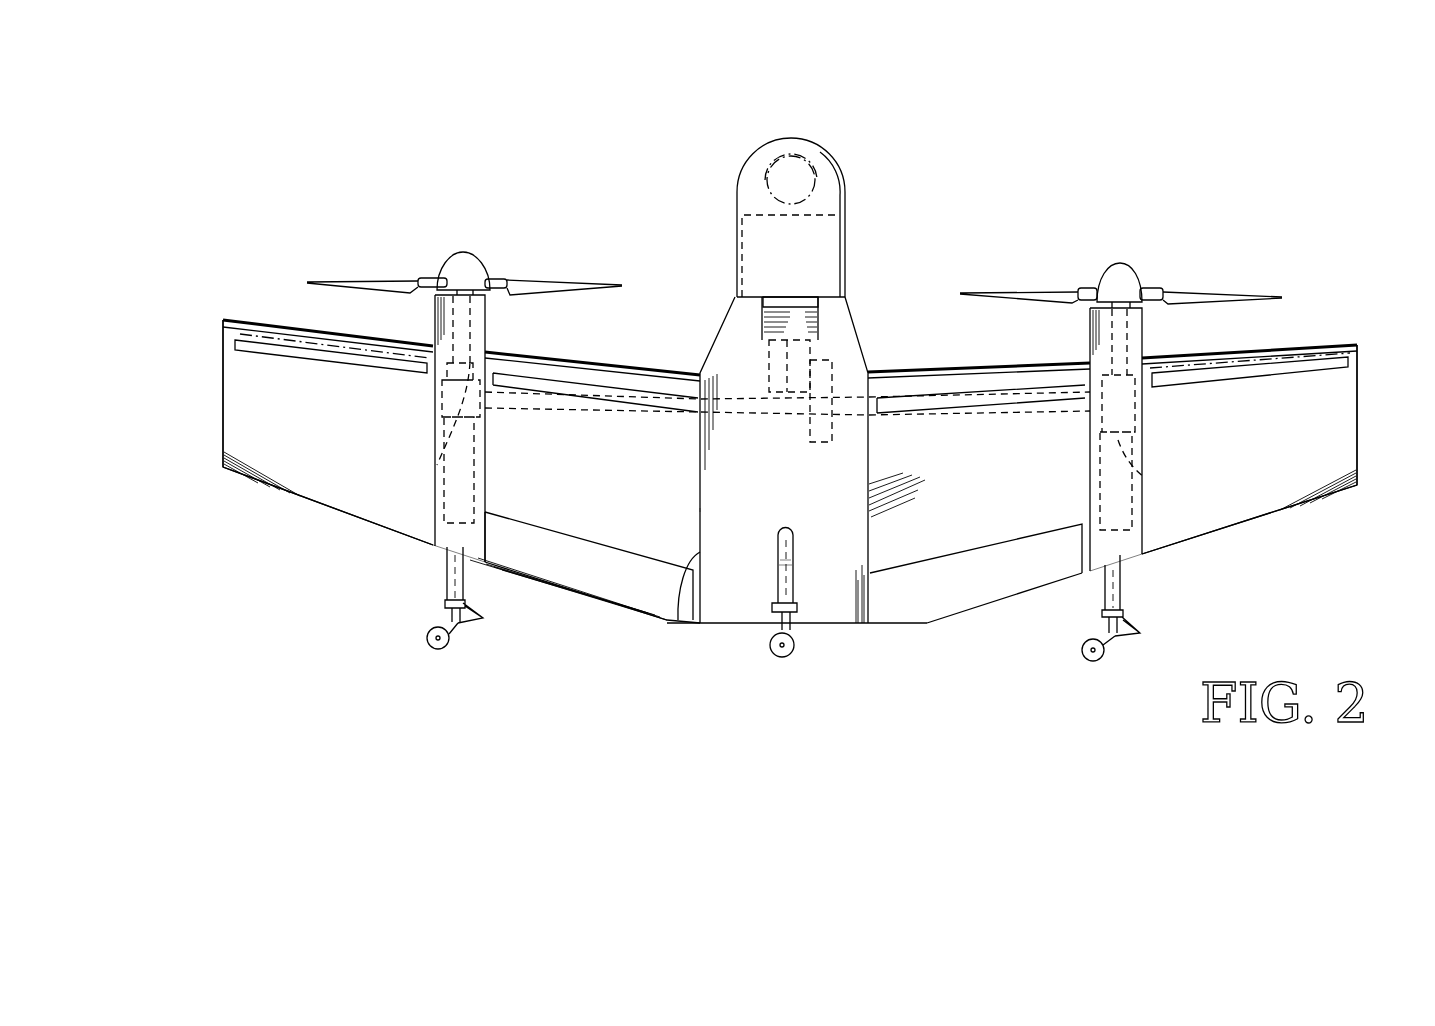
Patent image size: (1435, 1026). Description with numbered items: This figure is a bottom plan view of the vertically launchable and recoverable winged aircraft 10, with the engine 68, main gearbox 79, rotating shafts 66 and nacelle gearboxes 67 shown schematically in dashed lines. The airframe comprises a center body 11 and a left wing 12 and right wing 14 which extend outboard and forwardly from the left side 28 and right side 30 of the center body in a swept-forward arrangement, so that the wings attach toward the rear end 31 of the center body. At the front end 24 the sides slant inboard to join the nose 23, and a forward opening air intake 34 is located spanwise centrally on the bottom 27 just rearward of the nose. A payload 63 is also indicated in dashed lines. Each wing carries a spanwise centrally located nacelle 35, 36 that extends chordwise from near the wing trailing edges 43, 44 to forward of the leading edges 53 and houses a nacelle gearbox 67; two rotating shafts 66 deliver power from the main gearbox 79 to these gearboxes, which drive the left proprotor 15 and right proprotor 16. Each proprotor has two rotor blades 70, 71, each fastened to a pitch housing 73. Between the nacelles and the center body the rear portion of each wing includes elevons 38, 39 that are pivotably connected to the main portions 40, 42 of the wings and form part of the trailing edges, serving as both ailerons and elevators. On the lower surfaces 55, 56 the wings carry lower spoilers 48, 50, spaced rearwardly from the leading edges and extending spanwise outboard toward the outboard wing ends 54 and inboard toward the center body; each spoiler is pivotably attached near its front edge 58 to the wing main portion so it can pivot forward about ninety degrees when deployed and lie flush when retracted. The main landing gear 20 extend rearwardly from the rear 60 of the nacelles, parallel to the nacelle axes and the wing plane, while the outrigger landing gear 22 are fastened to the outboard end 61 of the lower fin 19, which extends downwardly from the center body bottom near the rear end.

The vertically launchable and recoverable winged aircraft 10 is at (617, 125).
The center body 11 is at (700, 508).
The left wing 12 is at (1305, 345).
The right wing 14 is at (244, 318).
The left proprotor 15 is at (1128, 263).
The right proprotor 16 is at (472, 258).
The lower directional stabilizer or fin 19 is at (793, 565).
The main landing gear 20 is at (458, 625).
The outrigger landing gear 22 is at (792, 645).
The nose 23 is at (833, 168).
The front end 24 is at (843, 245).
The bottom 27 is at (797, 380).
The left side 28 is at (875, 553).
The right side 30 is at (680, 620).
The rear end 31 is at (858, 625).
The forward opening air intake 34 is at (830, 298).
The nacelle 35 is at (1143, 422).
The nacelle 36 is at (433, 418).
The elevon 38 is at (1015, 600).
The elevon 39 is at (595, 607).
The main portion 40 is at (1229, 459).
The main portion 42 is at (299, 408).
The wing trailing edge 43 is at (1300, 510).
The wing trailing edge 44 is at (300, 495).
The lower spoiler 48 is at (318, 340).
The lower spoiler 50 is at (638, 385).
The wing leading edge 53 is at (590, 358).
The outboard wing end 54 is at (222, 400).
The lower surface 55 is at (1306, 419).
The lower surface 56 is at (592, 540).
The front edge 58 is at (272, 340).
The rear of nacelle 60 is at (435, 550).
The outboard end of fin 61 is at (778, 552).
The payload 63 is at (812, 165).
The rotating shaft 66 is at (585, 412).
The nacelle gearbox 67 is at (430, 470).
The engine 68 is at (812, 345).
The rotor blade 70 is at (580, 283).
The rotor blade 71 is at (372, 281).
The pitch housing 73 is at (430, 278).
The main gearbox 79 is at (835, 365).